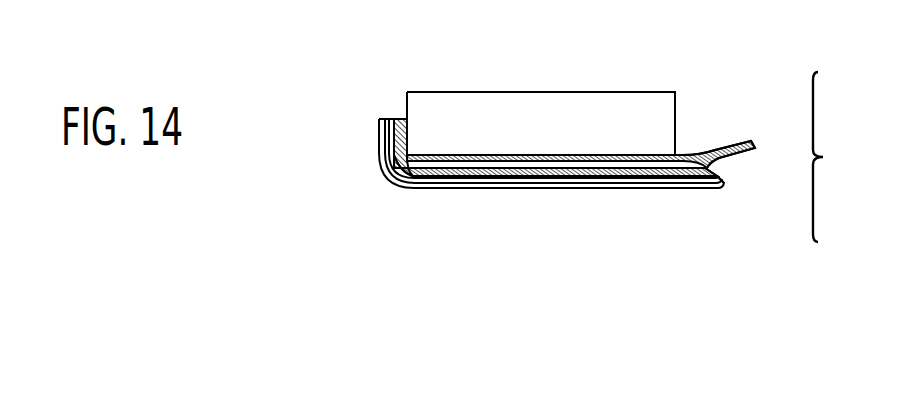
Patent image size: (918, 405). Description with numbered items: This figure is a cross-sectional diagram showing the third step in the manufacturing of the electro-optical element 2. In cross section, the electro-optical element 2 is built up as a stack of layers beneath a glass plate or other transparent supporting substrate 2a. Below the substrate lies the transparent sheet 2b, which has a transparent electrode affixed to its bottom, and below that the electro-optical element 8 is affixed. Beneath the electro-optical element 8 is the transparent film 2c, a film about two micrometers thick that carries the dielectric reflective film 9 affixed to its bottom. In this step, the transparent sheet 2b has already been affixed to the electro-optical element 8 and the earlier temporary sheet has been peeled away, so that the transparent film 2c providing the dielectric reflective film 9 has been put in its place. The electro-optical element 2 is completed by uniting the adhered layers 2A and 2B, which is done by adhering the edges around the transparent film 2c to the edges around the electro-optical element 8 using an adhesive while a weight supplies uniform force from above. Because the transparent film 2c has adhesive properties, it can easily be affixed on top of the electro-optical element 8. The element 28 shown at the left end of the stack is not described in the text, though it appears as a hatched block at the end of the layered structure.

The electro-optical element 2 is at (833, 157).
The transparent supporting substrate 2a is at (590, 100).
The adhered layer 2A is at (682, 158).
The transparent sheet 2b is at (742, 142).
The adhered layer 2B is at (712, 182).
The transparent film 2c is at (382, 156).
The electro-optical element 8 is at (452, 175).
The dielectric reflective film 9 is at (400, 188).
The end block 28 is at (402, 117).